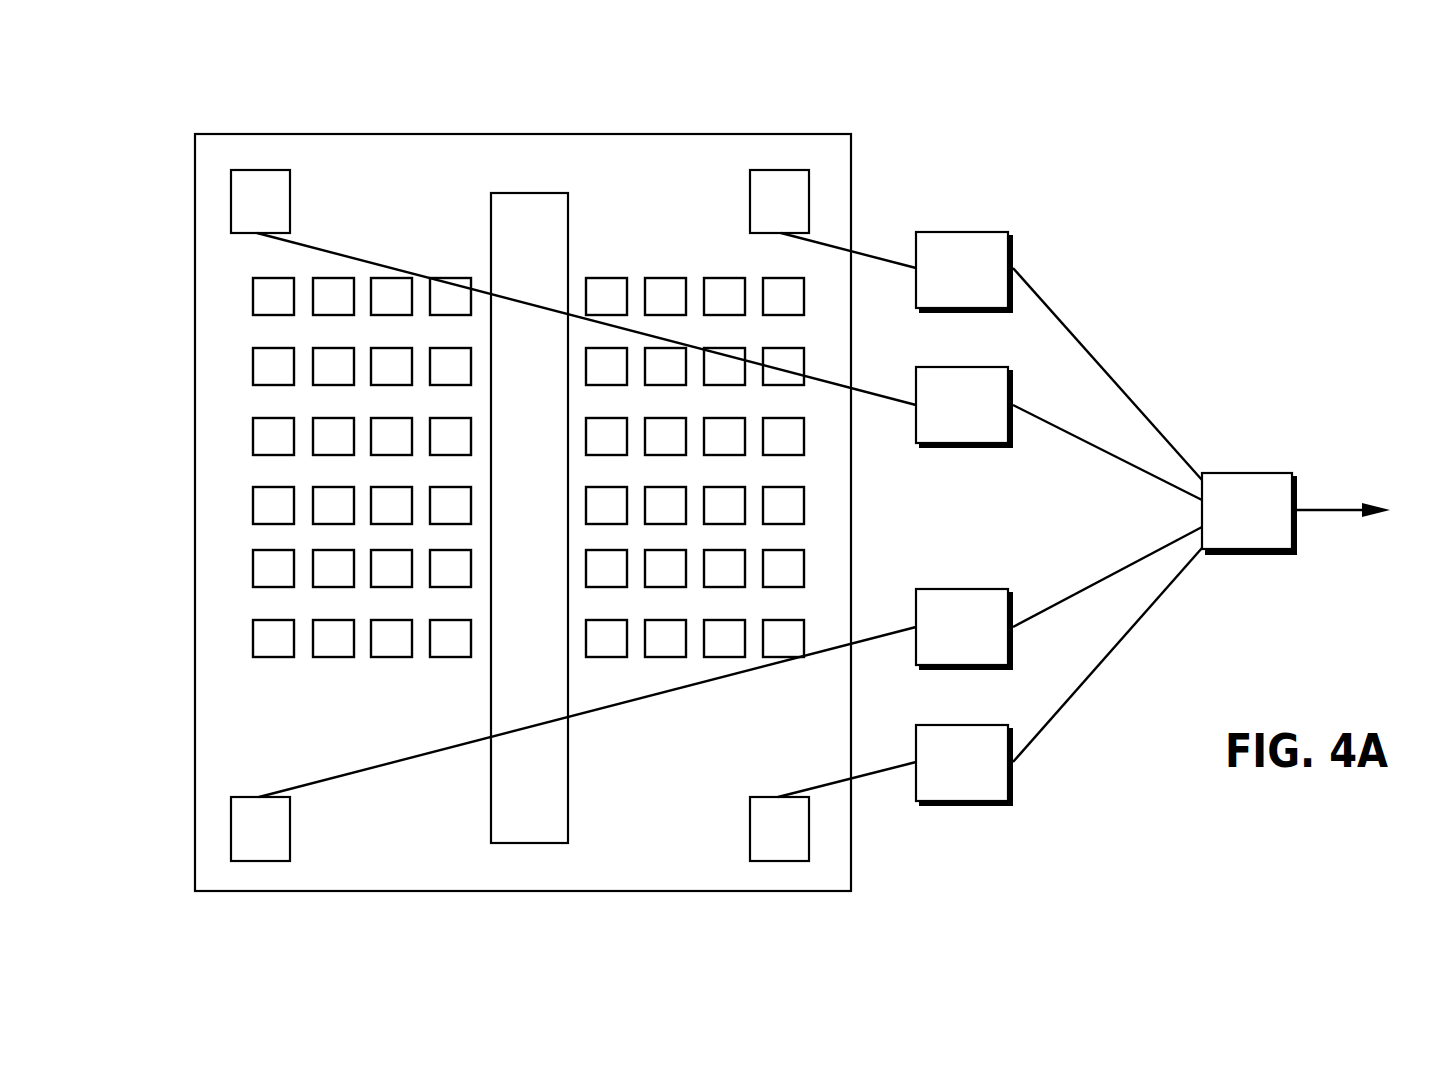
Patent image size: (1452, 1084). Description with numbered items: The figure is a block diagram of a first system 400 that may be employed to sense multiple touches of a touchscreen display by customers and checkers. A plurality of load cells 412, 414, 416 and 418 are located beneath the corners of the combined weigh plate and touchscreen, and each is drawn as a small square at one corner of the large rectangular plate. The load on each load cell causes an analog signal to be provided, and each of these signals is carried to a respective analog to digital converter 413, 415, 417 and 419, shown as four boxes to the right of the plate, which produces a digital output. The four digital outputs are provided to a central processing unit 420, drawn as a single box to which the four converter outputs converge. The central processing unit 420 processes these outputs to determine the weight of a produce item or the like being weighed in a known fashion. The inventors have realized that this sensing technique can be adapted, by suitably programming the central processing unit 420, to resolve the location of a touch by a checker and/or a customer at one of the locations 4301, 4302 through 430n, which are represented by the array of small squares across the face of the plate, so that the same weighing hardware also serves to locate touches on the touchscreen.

The first system 400 is at (1325, 113).
The load cell 412 is at (252, 861).
The analog to digital converter 413 is at (980, 589).
The load cell 414 is at (772, 861).
The analog to digital converter 415 is at (975, 806).
The load cell 416 is at (780, 170).
The analog to digital converter 417 is at (960, 232).
The load cell 418 is at (250, 170).
The analog to digital converter 419 is at (950, 448).
The central processing unit 420 is at (1245, 473).
The location 4301 is at (253, 289).
The location 4302 is at (333, 316).
The location 430n is at (793, 619).